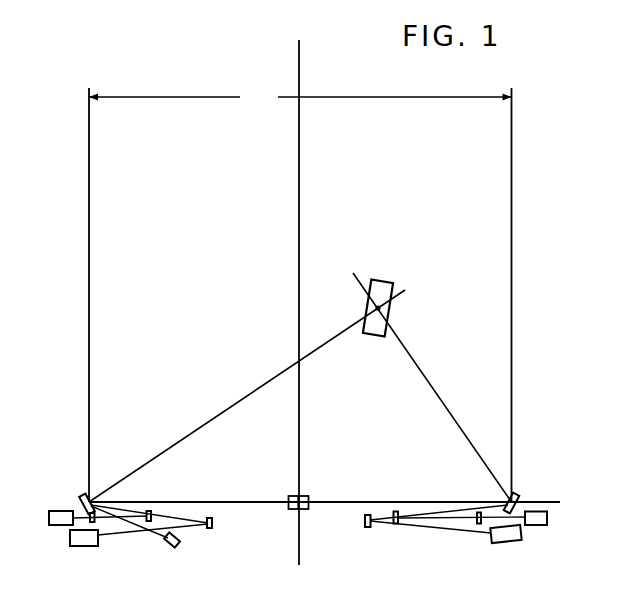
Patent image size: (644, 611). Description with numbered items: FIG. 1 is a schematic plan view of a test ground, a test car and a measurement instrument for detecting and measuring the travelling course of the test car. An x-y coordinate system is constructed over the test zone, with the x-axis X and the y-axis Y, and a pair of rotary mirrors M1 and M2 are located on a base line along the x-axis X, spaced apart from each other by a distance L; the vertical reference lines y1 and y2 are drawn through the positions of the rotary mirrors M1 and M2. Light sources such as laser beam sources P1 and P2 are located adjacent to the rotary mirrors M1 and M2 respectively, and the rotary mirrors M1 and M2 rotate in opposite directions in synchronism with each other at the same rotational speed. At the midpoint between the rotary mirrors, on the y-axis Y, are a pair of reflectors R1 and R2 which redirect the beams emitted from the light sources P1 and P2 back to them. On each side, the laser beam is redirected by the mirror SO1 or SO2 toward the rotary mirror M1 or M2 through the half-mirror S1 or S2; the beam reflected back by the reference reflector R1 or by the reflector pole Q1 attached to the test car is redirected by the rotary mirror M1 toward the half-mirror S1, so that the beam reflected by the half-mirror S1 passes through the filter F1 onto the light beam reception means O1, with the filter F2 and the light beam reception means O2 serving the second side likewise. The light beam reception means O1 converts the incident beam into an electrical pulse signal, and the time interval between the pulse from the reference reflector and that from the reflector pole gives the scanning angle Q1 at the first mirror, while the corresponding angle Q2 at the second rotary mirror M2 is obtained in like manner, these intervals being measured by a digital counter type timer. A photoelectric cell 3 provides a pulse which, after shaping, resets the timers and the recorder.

The x-axis X is at (334, 505).
The y-axis Y is at (298, 289).
The first vertical reference line y1 is at (75, 293).
The second vertical reference line y2 is at (526, 293).
The distance between rotary mirrors L is at (300, 100).
The reflector pole Q1 is at (393, 309).
The angle at second mirror Q2 is at (443, 408).
The rotary mirror M1 is at (85, 497).
The rotary mirror M2 is at (517, 495).
The reflector R1 is at (292, 496).
The reflector R2 is at (305, 496).
The light beam reception means O1 is at (55, 525).
The light beam reception means O2 is at (543, 525).
The light source P1 is at (80, 546).
The light source P2 is at (507, 543).
The filter F1 is at (95, 522).
The filter F2 is at (478, 523).
The half-mirror S1 is at (148, 521).
The half-mirror S2 is at (397, 523).
The mirror SO1 is at (212, 526).
The mirror SO2 is at (367, 527).
The photoelectric cell 3 is at (180, 545).